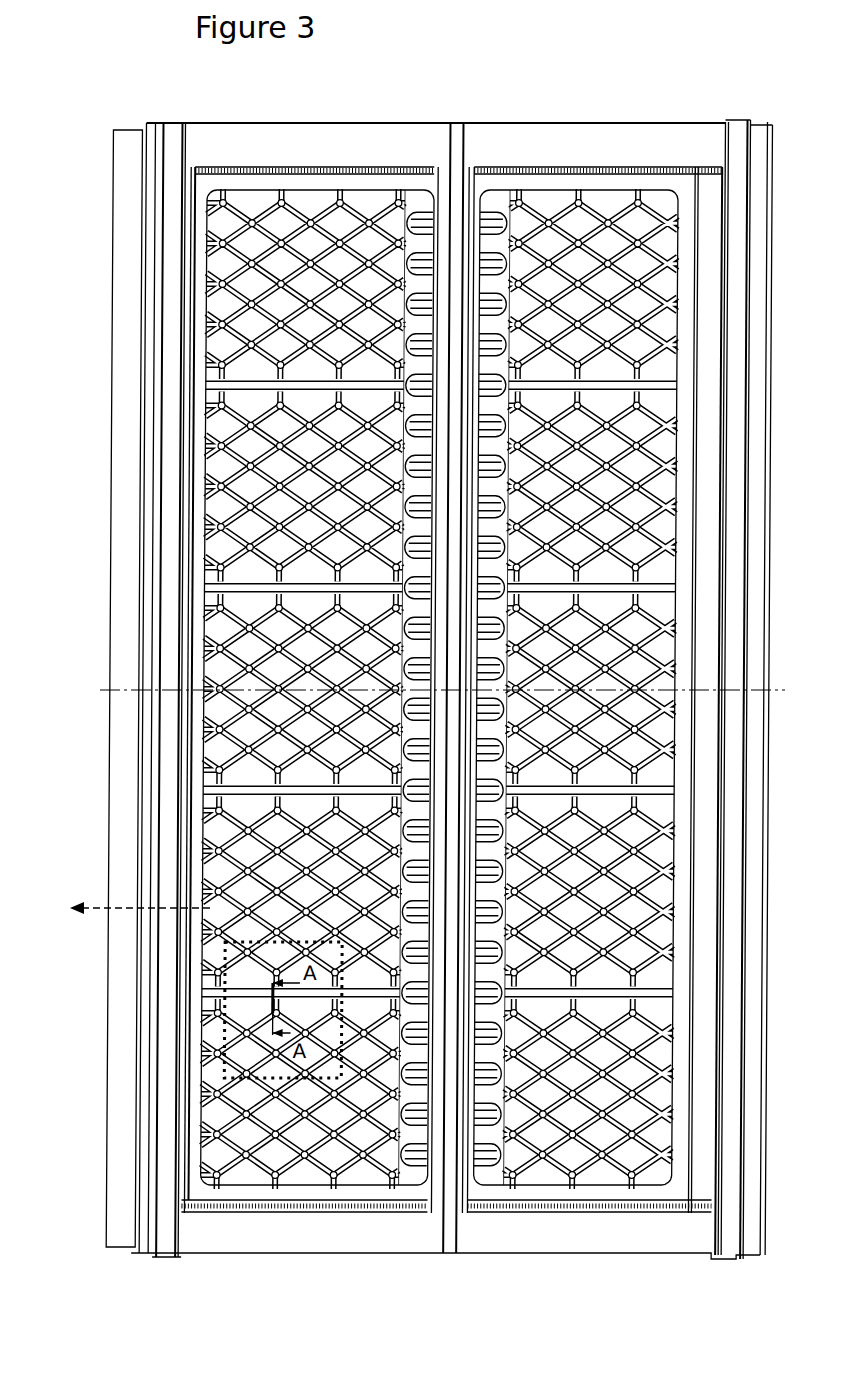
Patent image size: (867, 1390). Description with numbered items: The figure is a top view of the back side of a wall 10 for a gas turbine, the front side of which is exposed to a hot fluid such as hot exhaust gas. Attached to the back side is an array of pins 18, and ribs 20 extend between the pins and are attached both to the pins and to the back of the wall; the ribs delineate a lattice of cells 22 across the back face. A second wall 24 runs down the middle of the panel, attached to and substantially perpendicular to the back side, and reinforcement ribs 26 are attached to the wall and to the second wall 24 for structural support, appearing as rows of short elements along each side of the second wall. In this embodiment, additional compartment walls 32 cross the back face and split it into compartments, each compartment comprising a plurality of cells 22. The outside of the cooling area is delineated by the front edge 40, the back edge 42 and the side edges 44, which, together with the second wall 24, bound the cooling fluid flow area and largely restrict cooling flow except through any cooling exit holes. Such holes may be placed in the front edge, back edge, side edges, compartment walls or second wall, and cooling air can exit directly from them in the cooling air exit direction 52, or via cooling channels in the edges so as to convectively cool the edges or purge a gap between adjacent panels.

The wall 10 is at (652, 66).
The pins 18 is at (640, 240).
The ribs 20 is at (246, 689).
The cells 22 is at (228, 462).
The second wall 24 is at (465, 212).
The reinforcement ribs 26 is at (415, 212).
The compartment walls 32 is at (210, 387).
The front edge 40 is at (688, 218).
The back edge 42 is at (205, 225).
The side edges 44 is at (535, 182).
The cooling air exit direction 52 is at (120, 905).